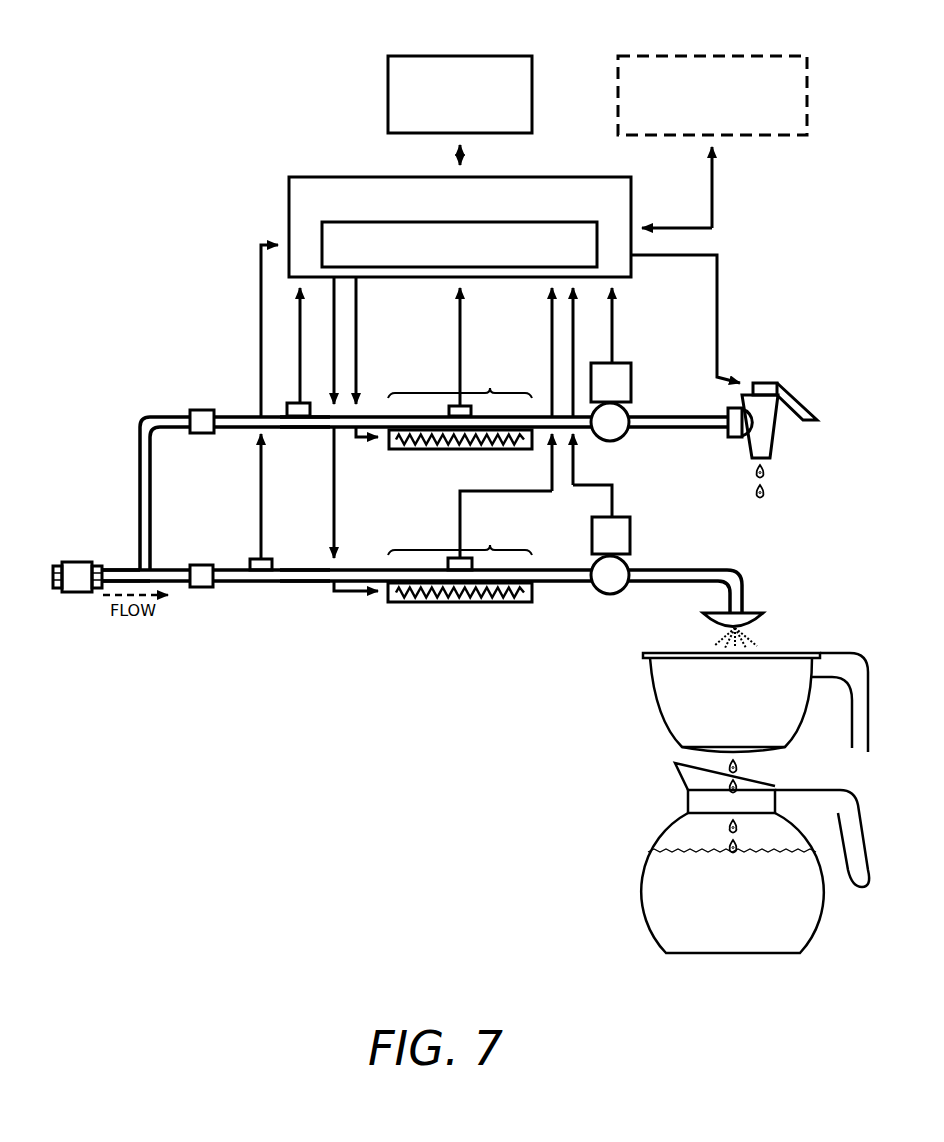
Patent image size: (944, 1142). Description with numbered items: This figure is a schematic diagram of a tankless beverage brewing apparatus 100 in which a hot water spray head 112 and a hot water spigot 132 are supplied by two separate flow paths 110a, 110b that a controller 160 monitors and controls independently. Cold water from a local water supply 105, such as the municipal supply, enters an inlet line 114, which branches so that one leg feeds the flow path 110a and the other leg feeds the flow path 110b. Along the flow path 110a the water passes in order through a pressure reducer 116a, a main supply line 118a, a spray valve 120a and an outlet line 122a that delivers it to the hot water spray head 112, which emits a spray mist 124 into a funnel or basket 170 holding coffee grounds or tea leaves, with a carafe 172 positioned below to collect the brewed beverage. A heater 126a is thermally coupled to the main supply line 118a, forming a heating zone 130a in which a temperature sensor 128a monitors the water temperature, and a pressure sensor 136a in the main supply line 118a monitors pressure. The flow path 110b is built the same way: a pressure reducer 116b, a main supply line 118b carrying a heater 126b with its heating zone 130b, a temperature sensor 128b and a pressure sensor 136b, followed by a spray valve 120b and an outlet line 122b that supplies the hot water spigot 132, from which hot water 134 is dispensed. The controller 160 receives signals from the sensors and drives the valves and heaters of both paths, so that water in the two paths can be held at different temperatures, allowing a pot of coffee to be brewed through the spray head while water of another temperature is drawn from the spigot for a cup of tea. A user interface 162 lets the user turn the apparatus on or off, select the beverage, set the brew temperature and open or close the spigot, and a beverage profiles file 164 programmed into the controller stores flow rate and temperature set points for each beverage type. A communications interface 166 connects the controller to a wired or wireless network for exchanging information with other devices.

The tankless beverage brewing apparatus 100 is at (203, 68).
The local water supply 105 is at (62, 565).
The flow path 110a is at (233, 596).
The flow path 110b is at (237, 397).
The hot water spray head 112 is at (755, 612).
The inlet line 114 is at (126, 568).
The pressure reducer 116a is at (198, 565).
The pressure reducer 116b is at (199, 410).
The main supply line 118a is at (295, 568).
The main supply line 118b is at (304, 429).
The spray valve 120a is at (632, 535).
The spray valve 120b is at (633, 384).
The outlet line 122a is at (643, 572).
The outlet line 122b is at (643, 417).
The spray mist 124 is at (760, 636).
The heater 126a is at (465, 603).
The heater 126b is at (465, 449).
The temperature sensor 128a is at (447, 566).
The temperature sensor 128b is at (447, 410).
The heating zone 130a is at (460, 538).
The heating zone 130b is at (460, 382).
The hot water spigot 132 is at (766, 383).
The dispensed hot water 134 is at (778, 478).
The pressure sensor 136a is at (248, 562).
The pressure sensor 136b is at (287, 408).
The controller 160 is at (460, 227).
The user interface 162 is at (460, 110).
The beverage profiles file 164 is at (459, 244).
The communications interface 166 is at (712, 142).
The funnel or basket 170 is at (755, 702).
The carafe 172 is at (755, 856).